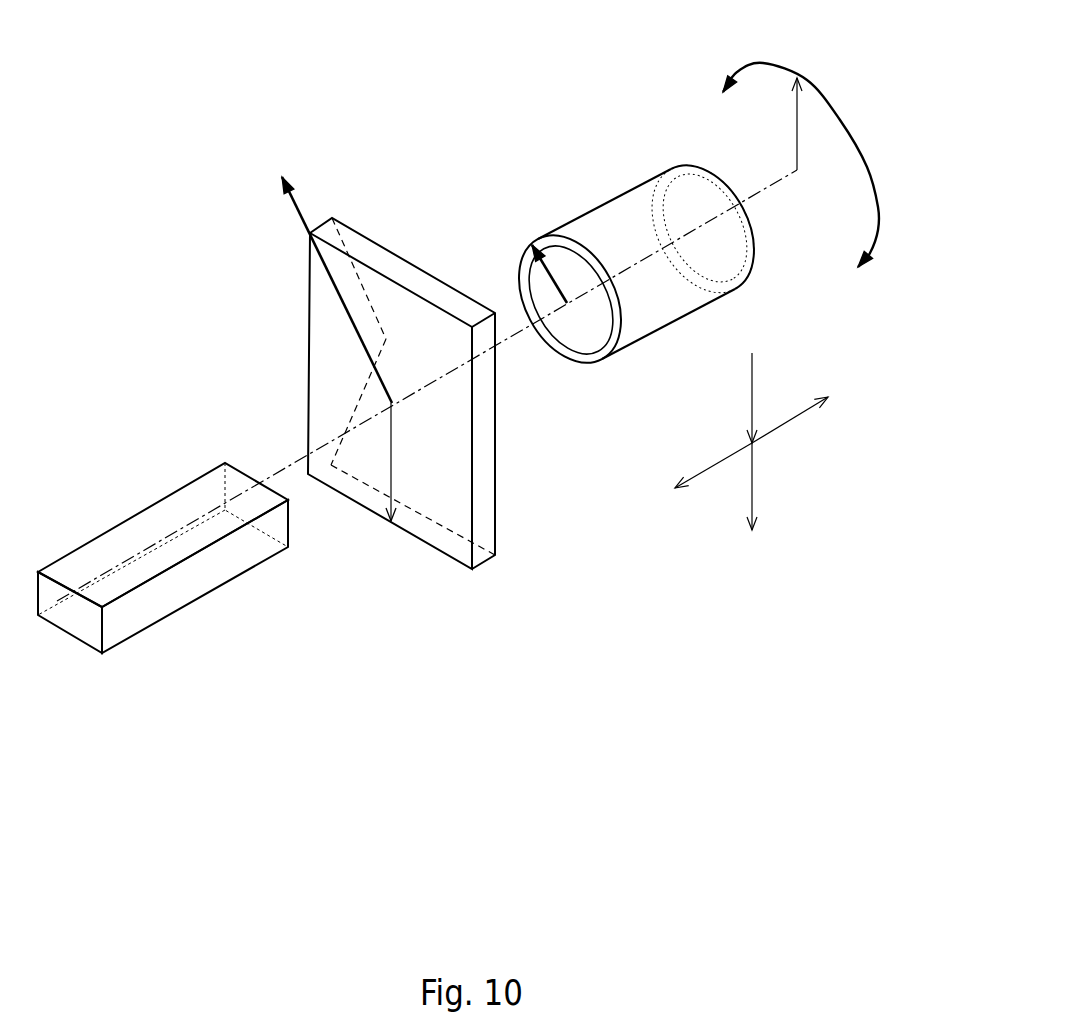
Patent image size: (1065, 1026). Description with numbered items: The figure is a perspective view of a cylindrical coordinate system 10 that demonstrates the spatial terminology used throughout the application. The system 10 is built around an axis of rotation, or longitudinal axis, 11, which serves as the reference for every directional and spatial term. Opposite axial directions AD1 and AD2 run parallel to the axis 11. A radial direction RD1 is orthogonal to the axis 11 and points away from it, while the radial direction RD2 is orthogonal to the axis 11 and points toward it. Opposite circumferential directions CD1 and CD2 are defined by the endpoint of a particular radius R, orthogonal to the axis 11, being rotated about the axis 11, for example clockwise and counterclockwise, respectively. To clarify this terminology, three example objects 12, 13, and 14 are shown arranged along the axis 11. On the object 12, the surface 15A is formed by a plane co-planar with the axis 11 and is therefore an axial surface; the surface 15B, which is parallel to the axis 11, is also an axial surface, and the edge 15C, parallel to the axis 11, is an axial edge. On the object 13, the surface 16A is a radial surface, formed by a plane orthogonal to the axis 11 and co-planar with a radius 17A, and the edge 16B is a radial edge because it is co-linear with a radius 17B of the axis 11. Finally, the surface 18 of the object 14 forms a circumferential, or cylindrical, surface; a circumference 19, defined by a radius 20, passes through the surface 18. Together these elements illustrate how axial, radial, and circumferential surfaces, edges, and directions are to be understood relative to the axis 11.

The cylindrical coordinate system 10 is at (262, 310).
The axis of rotation 11 is at (731, 207).
The object 12 is at (176, 540).
The object 13 is at (453, 348).
The object 14 is at (603, 274).
The axial surface 15A is at (128, 538).
The axial surface 15B is at (180, 593).
The axial edge 15C is at (156, 502).
The radial surface 16A is at (395, 303).
The radial edge 16B is at (342, 297).
The radius 17A is at (392, 457).
The radius 17B is at (295, 210).
The circumferential surface 18 is at (602, 202).
The circumference 19 is at (520, 262).
The radius 20 is at (520, 290).
The radius R is at (795, 118).
The circumferential direction CD1 is at (880, 223).
The circumferential direction CD2 is at (753, 63).
The radial direction RD1 is at (752, 497).
The radial direction RD2 is at (752, 373).
The axial direction AD1 is at (780, 423).
The axial direction AD2 is at (713, 463).